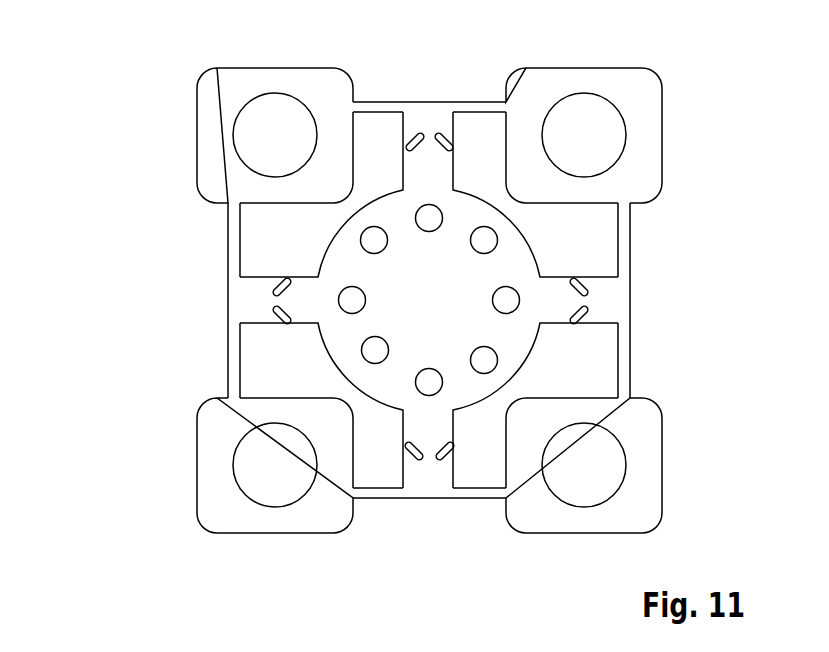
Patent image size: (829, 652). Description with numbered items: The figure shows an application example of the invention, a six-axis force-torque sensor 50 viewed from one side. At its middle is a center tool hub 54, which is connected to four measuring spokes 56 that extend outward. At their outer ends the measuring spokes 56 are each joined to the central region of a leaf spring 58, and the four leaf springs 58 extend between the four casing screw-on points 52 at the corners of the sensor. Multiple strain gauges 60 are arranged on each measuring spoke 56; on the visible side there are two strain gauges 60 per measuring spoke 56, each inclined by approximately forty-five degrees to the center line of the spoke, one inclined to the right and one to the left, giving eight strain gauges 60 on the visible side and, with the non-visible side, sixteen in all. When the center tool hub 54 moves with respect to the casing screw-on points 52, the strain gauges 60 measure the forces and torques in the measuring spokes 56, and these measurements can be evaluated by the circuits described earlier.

The 6D force-torque sensor 50 is at (157, 142).
The casing screw-on point 52 is at (597, 118).
The center tool hub 54 is at (447, 307).
The measuring spoke 56 is at (257, 306).
The leaf spring 58 is at (228, 373).
The strain gauge 60 is at (446, 130).